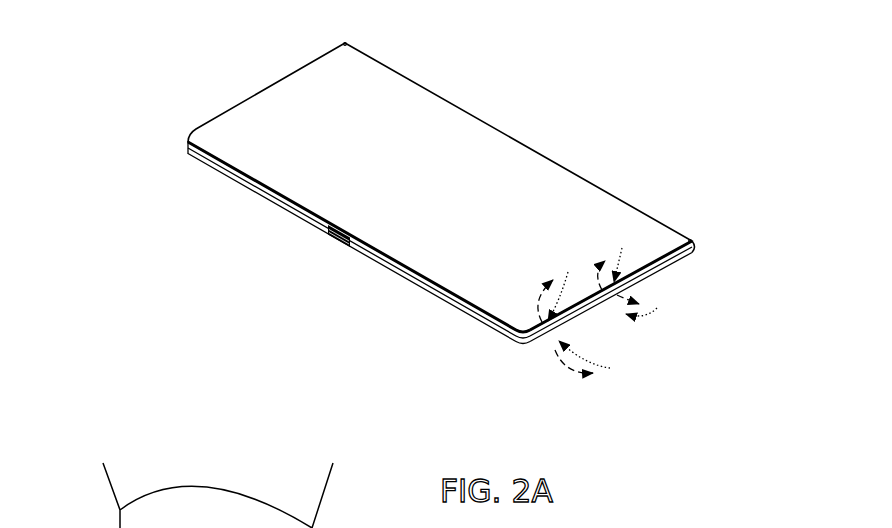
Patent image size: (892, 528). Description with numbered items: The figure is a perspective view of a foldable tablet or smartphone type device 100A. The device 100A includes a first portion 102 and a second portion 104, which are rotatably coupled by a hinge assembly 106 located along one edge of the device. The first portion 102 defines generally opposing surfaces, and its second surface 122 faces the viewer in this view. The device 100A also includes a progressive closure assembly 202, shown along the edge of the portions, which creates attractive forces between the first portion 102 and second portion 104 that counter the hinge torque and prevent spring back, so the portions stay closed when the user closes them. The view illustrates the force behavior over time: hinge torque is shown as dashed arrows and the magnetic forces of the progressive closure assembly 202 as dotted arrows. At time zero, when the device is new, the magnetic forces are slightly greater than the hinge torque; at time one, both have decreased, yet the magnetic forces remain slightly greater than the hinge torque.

The device 100A is at (435, 203).
The first portion 102 is at (380, 84).
The second portion 104 is at (186, 155).
The hinge assembly 106 is at (700, 250).
The second surface 122 is at (553, 194).
The progressive closure assembly 202 is at (271, 277).